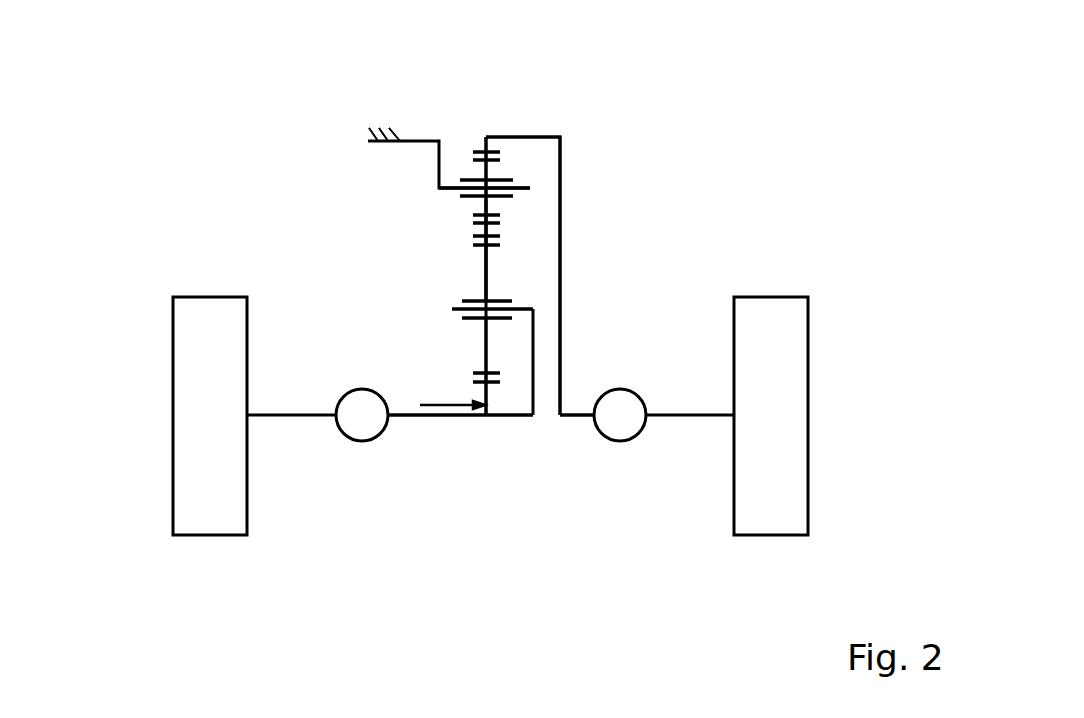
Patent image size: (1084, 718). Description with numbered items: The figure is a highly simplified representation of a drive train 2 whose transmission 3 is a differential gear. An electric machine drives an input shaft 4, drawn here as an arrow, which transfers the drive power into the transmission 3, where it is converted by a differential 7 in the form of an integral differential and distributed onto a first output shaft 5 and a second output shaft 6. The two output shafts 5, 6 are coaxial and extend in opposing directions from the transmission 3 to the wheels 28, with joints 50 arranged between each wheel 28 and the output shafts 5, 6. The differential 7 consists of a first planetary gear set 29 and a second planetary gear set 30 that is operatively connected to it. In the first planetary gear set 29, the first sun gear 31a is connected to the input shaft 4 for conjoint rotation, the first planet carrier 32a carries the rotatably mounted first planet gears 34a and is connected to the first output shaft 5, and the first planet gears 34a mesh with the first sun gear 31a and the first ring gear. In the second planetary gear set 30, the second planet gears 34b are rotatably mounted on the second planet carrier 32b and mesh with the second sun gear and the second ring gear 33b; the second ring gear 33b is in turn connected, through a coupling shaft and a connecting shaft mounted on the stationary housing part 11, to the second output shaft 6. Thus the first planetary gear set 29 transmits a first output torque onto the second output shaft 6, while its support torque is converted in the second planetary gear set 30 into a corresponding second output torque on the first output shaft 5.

The drive train 2 is at (695, 98).
The transmission 3 is at (615, 100).
The differential 7 is at (565, 108).
The housing part 11 is at (393, 135).
The wheels 28 is at (205, 518).
The first planetary gear set 29 is at (532, 238).
The second planetary gear set 30 is at (512, 170).
The first sun gear 31a is at (473, 227).
The first planet carrier 32a is at (520, 307).
The second planet carrier 32b is at (438, 188).
The second ring gear 33b is at (478, 150).
The first planet gears 34a is at (488, 335).
The second planet gears 34b is at (483, 171).
The input shaft 4 is at (438, 405).
The first output shaft 5 is at (472, 407).
The second output shaft 6 is at (577, 415).
The joints 50 is at (362, 415).